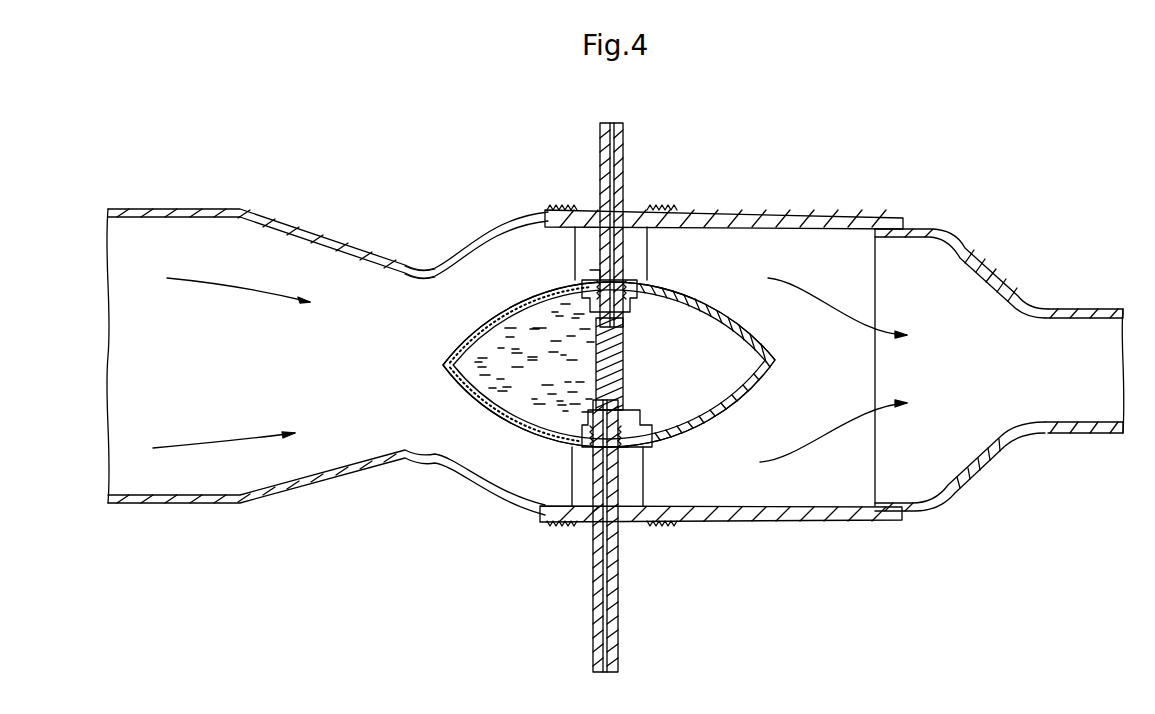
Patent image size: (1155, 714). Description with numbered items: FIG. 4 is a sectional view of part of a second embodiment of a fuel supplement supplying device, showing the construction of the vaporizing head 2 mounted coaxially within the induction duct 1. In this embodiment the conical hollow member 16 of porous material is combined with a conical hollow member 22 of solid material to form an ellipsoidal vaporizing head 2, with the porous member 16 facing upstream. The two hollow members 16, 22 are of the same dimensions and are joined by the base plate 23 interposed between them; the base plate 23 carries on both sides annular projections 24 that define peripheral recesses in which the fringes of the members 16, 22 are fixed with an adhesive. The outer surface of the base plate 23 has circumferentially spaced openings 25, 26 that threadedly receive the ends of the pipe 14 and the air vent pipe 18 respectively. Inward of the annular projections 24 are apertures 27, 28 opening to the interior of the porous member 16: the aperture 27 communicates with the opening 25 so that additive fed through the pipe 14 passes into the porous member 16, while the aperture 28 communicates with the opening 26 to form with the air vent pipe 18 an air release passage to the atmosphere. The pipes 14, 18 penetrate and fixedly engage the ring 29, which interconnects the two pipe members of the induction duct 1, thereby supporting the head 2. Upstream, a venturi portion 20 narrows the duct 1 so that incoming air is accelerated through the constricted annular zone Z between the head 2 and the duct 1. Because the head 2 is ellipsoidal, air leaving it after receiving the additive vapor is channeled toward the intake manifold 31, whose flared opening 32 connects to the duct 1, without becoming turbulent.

The induction duct 1 is at (224, 506).
The vaporizing head 2 is at (490, 423).
The pipe 14 is at (592, 598).
The conical hollow member 16 is at (508, 300).
The air vent pipe 18 is at (626, 146).
The venturi portion 20 is at (433, 277).
The conical hollow member 22 is at (723, 413).
The base plate 23 is at (628, 335).
The annular projections 24 is at (577, 315).
The opening 25 is at (620, 452).
The opening 26 is at (598, 272).
The aperture 27 is at (580, 418).
The aperture 28 is at (558, 335).
The ring 29 is at (663, 207).
The intake manifold 31 is at (1075, 308).
The flared opening 32 is at (920, 250).
The annular zone Z is at (530, 470).